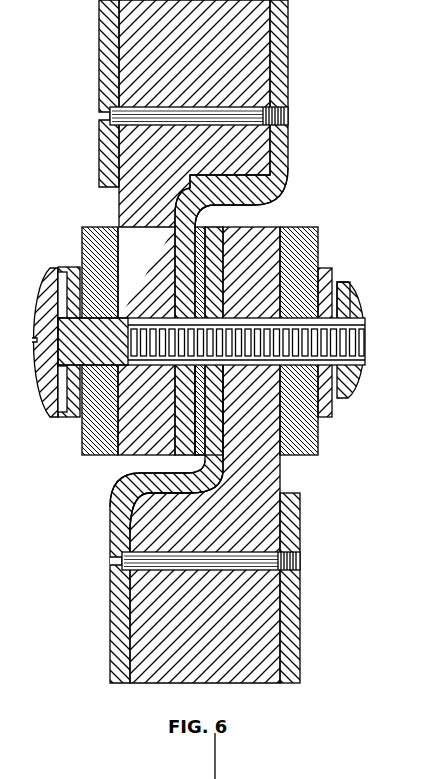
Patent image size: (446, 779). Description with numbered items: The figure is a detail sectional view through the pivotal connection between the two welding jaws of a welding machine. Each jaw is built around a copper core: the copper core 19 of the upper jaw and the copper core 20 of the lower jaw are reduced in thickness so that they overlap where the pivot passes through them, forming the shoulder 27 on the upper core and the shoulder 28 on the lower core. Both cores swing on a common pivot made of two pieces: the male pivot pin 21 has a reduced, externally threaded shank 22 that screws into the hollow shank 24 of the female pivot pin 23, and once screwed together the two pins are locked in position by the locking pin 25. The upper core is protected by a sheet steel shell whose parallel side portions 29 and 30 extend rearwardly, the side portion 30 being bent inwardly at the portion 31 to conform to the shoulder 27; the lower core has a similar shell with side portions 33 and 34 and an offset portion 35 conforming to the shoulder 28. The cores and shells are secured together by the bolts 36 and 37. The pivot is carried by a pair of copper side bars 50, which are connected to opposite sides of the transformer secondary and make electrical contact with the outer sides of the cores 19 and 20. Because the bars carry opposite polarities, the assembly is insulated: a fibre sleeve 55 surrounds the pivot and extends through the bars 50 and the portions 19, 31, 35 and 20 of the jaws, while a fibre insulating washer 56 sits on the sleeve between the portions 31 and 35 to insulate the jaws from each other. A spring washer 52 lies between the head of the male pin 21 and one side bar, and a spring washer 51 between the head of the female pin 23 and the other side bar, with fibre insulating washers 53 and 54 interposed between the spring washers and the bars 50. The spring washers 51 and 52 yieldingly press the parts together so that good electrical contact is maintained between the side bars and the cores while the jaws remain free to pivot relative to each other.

The copper core 19 is at (235, 58).
The copper core 20 is at (242, 443).
The male pivot pin 21 is at (40, 373).
The externally-threaded shank 22 is at (326, 272).
The female pivot pin 23 is at (357, 315).
The hollow shank 24 is at (353, 373).
The locking pin 25 is at (370, 343).
The shoulder 27 is at (279, 183).
The shoulder 28 is at (208, 478).
The side portion 29 is at (113, 60).
The side portion 30 is at (277, 80).
The inwardly bent portion 31 is at (132, 455).
The side portion 33 is at (127, 640).
The side portion 34 is at (285, 600).
The offset portion 35 is at (215, 400).
The bolt 36 is at (232, 115).
The bolt 37 is at (153, 573).
The copper side bar 50 is at (88, 242).
The spring washer 51 is at (344, 284).
The spring washer 52 is at (58, 281).
The fibre insulating washer 53 is at (70, 417).
The fibre insulating washer 54 is at (338, 397).
The fibre sleeve 55 is at (148, 317).
The fibre insulating washer 56 is at (228, 228).